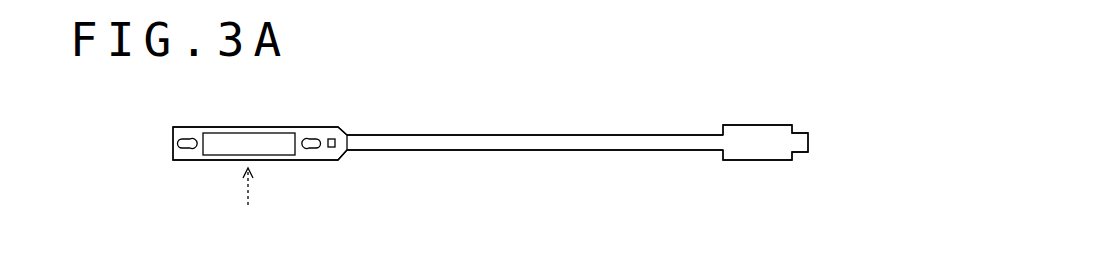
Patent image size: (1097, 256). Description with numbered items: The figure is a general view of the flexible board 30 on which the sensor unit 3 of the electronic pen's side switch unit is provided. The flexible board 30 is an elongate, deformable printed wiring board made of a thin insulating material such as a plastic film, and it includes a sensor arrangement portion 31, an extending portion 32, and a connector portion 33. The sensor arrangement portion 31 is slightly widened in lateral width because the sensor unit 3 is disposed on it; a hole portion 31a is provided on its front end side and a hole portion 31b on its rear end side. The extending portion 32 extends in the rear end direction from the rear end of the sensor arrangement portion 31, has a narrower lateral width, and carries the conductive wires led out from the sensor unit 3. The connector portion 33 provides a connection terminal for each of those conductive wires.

The flexible board 30 is at (505, 122).
The sensor unit 3 is at (245, 140).
The sensor arrangement portion 31 is at (303, 131).
The hole portion 31a is at (190, 149).
The hole portion 31b is at (312, 150).
The extending portion 32 is at (522, 145).
The connector portion 33 is at (800, 145).